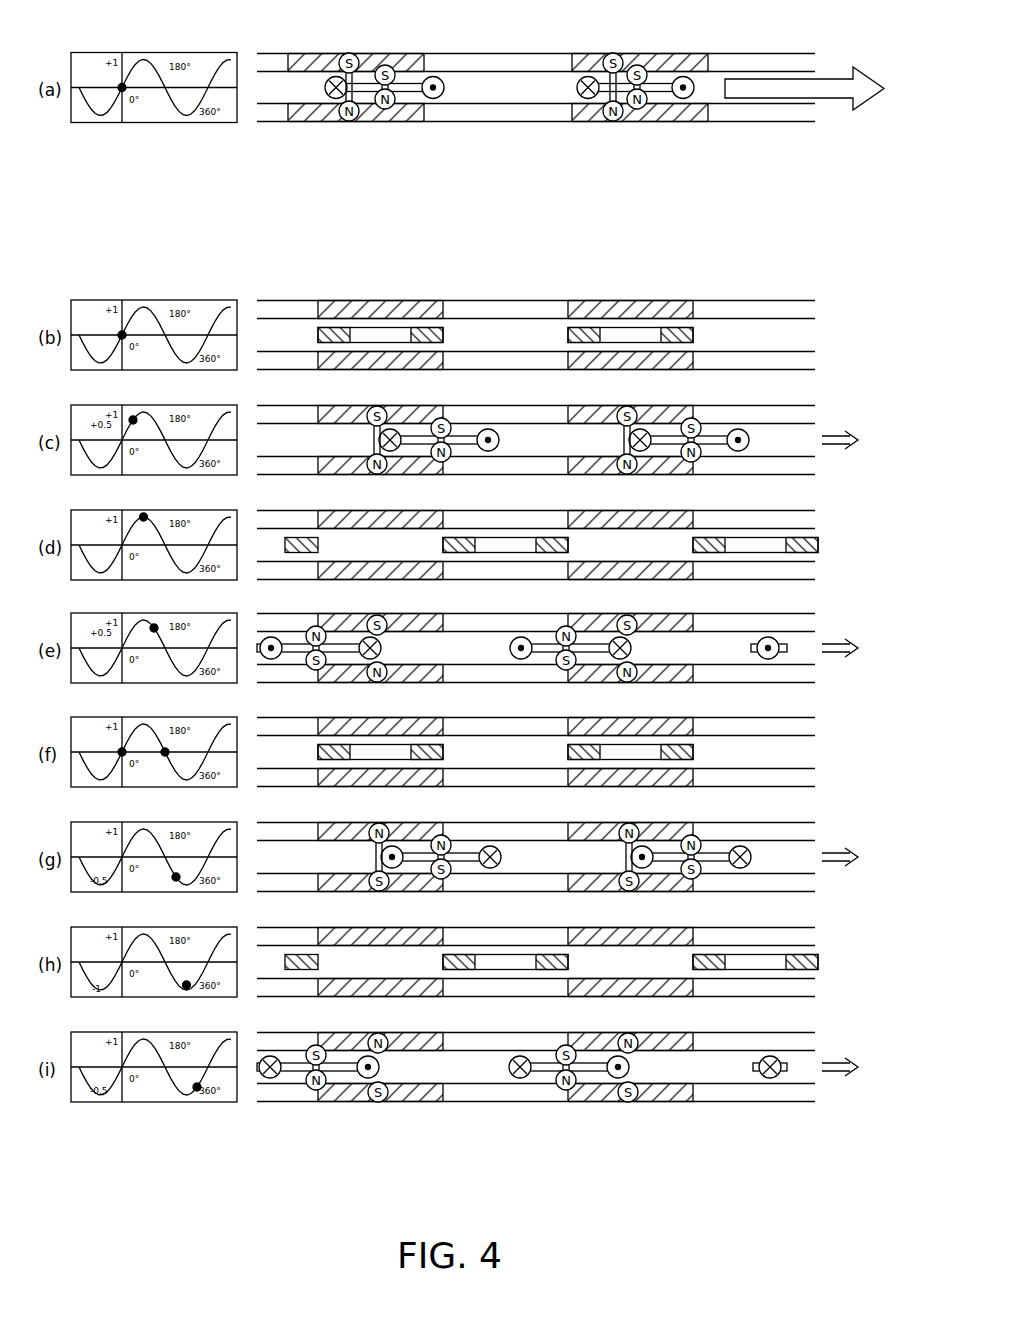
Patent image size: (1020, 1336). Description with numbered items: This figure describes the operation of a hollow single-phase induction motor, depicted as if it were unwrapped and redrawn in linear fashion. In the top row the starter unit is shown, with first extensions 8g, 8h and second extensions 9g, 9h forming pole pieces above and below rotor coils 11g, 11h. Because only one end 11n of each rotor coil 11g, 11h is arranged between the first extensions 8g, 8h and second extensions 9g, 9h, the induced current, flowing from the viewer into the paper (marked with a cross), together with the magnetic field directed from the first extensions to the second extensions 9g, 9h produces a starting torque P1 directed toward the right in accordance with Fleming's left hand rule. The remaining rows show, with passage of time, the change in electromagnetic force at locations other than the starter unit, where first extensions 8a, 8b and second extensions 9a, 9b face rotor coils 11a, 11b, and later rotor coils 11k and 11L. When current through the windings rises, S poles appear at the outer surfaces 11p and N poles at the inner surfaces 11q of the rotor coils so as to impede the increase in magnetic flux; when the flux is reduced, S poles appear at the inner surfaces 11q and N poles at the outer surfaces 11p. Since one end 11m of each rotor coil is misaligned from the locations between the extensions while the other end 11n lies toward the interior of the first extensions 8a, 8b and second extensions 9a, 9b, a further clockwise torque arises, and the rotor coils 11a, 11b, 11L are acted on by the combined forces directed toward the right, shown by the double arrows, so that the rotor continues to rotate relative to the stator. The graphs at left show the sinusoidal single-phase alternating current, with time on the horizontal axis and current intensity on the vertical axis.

The first extension 8a is at (345, 302).
The second extension 9a is at (325, 369).
The first extension 8b is at (603, 302).
The second extension 9b is at (578, 369).
The first extension 8g is at (309, 58).
The second extension 9g is at (333, 113).
The first extension 8h is at (586, 60).
The second extension 9h is at (600, 113).
The rotor coil 11a is at (312, 335).
The rotor coil 11b is at (562, 335).
The rotor coil 11g is at (318, 87).
The rotor coil 11h is at (570, 87).
The rotor coil 11k is at (324, 962).
The rotor coil 11L is at (324, 545).
The end in the circumferential direction 11n is at (333, 100).
The outer surface 11p is at (415, 62).
The inner surface 11q is at (418, 112).
The end in the circumferential direction 11m is at (446, 98).
The starting torque P1 is at (800, 99).